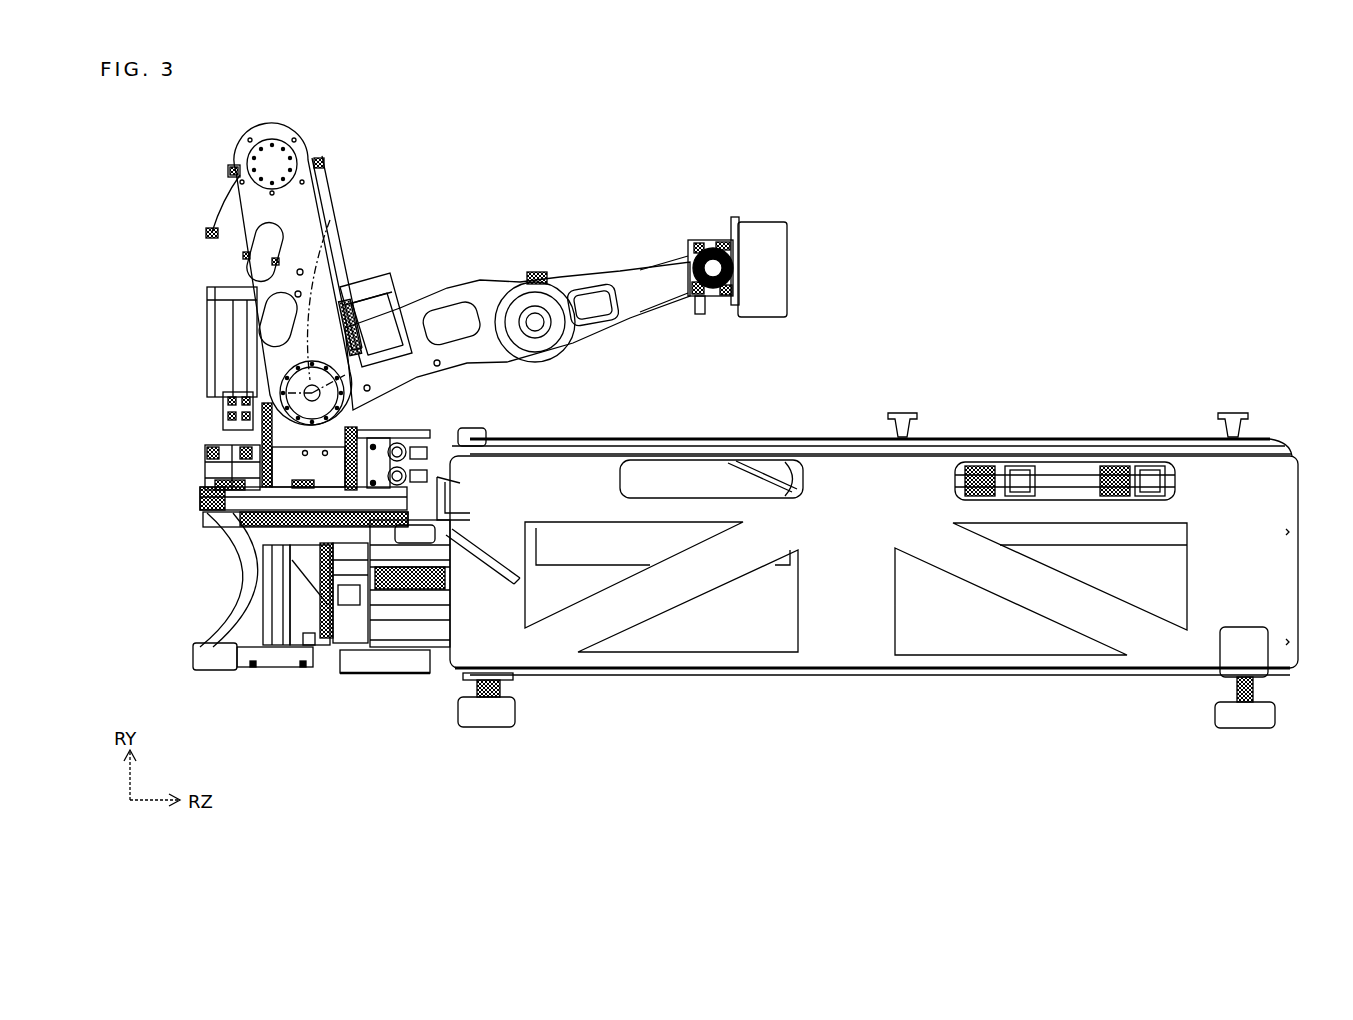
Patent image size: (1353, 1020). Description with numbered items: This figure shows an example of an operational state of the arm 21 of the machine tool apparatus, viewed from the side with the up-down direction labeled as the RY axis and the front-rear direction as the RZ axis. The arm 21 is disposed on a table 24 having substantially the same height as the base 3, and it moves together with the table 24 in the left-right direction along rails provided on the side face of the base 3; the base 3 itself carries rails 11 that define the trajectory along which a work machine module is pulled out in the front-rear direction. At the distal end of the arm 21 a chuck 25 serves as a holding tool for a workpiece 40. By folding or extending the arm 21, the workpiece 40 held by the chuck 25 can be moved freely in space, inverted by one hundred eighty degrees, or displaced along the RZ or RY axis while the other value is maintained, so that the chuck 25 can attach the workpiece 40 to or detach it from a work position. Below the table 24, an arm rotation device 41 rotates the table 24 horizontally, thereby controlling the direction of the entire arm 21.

The base 3 is at (1157, 638).
The rails 11 is at (1083, 437).
The arm 21 is at (247, 198).
The table 24 is at (215, 425).
The chuck 25 is at (337, 300).
The workpiece 40 is at (370, 293).
The arm rotation device 41 is at (205, 512).